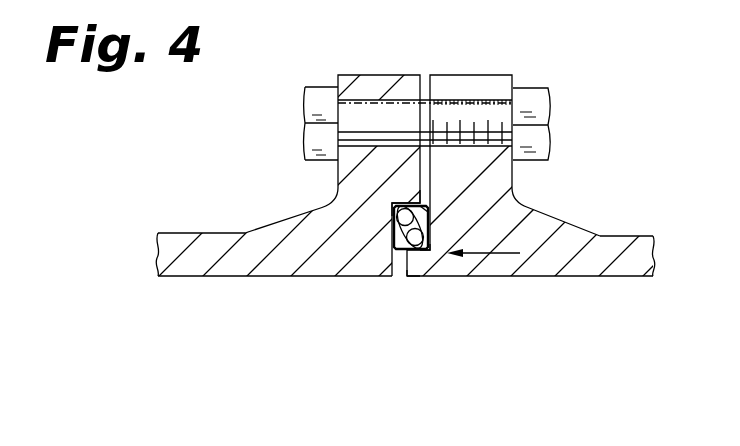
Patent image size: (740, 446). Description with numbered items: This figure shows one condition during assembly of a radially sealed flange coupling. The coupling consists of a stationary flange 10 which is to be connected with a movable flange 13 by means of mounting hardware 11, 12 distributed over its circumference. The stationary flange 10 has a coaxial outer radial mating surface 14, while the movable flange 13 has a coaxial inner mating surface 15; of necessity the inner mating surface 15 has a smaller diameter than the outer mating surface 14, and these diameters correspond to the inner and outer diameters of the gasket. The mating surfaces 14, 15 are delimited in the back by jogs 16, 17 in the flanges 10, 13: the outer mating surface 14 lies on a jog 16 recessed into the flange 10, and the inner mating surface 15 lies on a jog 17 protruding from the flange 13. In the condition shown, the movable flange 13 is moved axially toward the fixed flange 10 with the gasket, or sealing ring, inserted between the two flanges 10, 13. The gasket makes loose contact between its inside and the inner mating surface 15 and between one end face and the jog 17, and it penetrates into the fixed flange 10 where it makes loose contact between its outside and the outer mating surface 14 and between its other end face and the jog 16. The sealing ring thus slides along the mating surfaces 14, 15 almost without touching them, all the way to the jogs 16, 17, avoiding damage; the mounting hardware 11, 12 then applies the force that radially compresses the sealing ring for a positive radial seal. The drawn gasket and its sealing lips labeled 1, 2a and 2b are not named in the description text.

The seal ring 1 is at (420, 222).
The first sealing lip 2a is at (425, 214).
The second sealing lip 2b is at (410, 275).
The stationary flange 10 is at (171, 240).
The mounting hardware 11 is at (313, 90).
The mounting hardware 12 is at (540, 103).
The movable flange 13 is at (553, 223).
The outer radial mating surface 14 is at (397, 200).
The inner mating surface 15 is at (432, 250).
The jog 16 is at (358, 213).
The jog 17 is at (443, 150).